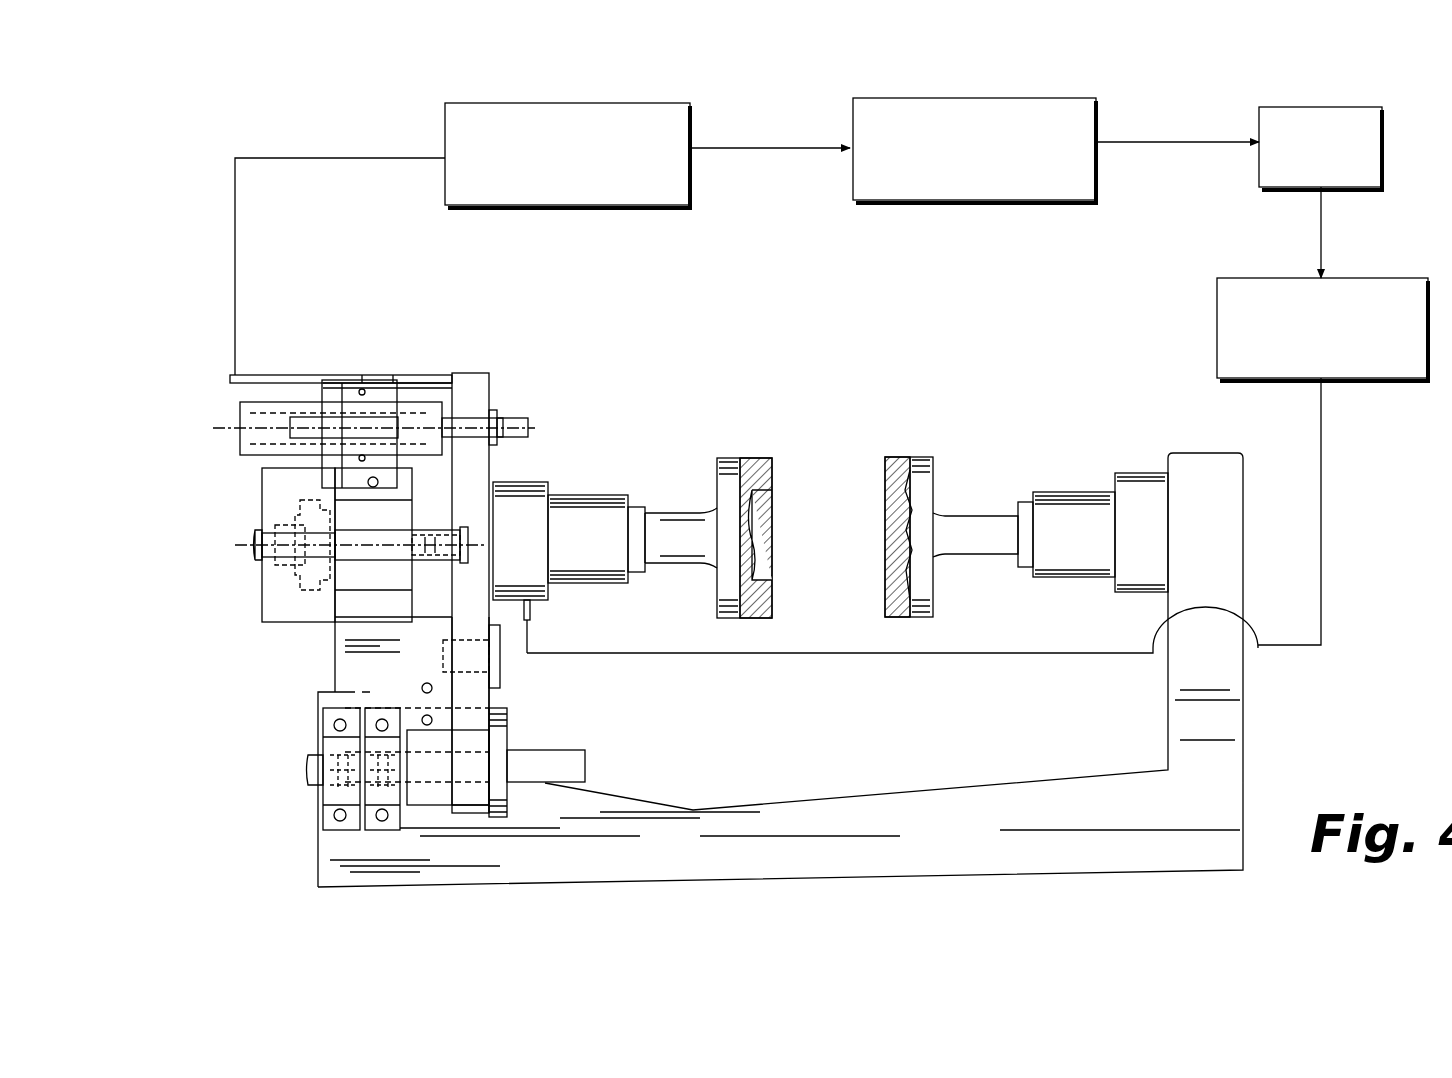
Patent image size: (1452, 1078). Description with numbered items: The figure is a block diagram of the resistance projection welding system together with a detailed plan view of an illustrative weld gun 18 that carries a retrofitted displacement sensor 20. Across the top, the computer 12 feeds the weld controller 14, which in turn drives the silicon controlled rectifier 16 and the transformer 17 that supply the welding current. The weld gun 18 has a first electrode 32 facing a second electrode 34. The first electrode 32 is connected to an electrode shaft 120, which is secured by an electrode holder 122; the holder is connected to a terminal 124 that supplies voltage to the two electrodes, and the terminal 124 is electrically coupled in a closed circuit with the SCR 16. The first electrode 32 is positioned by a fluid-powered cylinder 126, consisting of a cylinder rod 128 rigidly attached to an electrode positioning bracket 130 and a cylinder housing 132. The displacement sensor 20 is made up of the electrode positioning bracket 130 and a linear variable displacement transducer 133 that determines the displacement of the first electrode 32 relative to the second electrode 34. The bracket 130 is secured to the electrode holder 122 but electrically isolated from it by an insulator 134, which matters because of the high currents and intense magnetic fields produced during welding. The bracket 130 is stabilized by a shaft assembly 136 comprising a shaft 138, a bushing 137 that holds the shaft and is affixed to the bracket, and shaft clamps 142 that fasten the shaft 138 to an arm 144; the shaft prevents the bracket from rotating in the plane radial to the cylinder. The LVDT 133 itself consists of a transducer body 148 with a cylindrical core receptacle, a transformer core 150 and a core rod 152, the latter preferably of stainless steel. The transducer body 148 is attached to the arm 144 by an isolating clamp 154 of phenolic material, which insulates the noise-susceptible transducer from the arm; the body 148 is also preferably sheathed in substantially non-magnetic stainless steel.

The computer 12 is at (700, 206).
The weld controller 14 is at (853, 197).
The silicon controlled rectifier 16 is at (1259, 168).
The transformer 17 is at (1217, 300).
The weld gun 18 is at (263, 642).
The displacement sensor 20 is at (335, 300).
The first electrode 32 is at (735, 455).
The second electrode 34 is at (933, 475).
The electrode shaft 120 is at (700, 565).
The electrode holder 122 is at (617, 495).
The terminal 124 is at (534, 606).
The fluid-powered cylinder 126 is at (250, 606).
The cylinder rod 128 is at (358, 562).
The electrode positioning bracket 130 is at (490, 385).
The cylinder housing 132 is at (257, 492).
The linear variable displacement transducer 133 is at (285, 375).
The insulator 134 is at (493, 480).
The shaft assembly 136 is at (507, 730).
The bushing 137 is at (500, 672).
The shaft 138 is at (585, 762).
The shaft clamps 142 is at (322, 817).
The arm 144 is at (478, 883).
The transducer body 148 is at (240, 408).
The transformer core 150 is at (405, 400).
The core rod 152 is at (530, 420).
The isolating clamp 154 is at (355, 380).